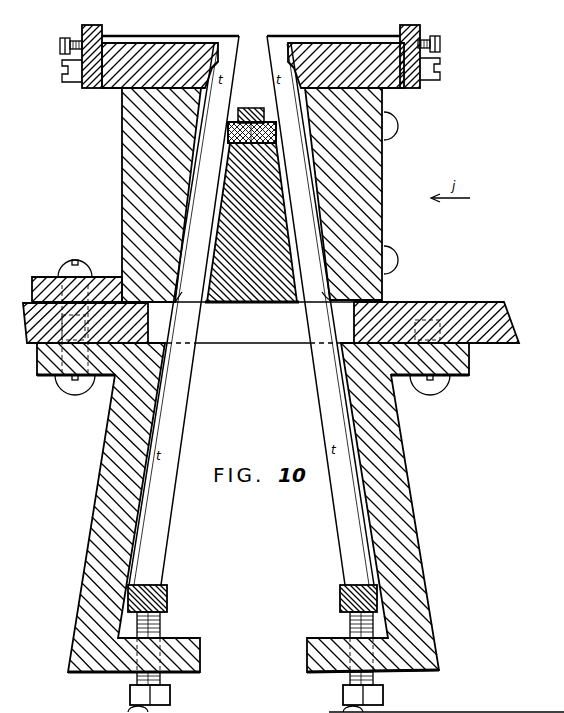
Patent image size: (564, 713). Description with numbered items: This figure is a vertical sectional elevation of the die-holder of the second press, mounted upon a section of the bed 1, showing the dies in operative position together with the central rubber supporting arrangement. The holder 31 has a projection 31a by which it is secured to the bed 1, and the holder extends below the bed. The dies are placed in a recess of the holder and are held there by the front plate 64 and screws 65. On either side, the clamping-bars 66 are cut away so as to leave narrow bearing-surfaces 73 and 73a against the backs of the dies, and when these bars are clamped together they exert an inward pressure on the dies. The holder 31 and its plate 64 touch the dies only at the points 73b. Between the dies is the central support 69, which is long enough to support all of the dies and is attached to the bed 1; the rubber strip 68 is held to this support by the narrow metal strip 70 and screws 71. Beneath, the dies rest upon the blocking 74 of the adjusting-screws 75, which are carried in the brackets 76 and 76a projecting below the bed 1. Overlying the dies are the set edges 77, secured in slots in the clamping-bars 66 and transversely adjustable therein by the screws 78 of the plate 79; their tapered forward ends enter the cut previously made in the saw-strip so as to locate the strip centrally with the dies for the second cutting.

The bed 1 is at (273, 322).
The holder 31 is at (122, 199).
The projection 31a is at (108, 270).
The front plate 64 is at (383, 213).
The screws 65 is at (389, 131).
The clamping-bars 66 is at (112, 90).
The rubber strip 68 is at (262, 132).
The central support 69 is at (274, 303).
The narrow metal strip 70 is at (244, 108).
The screws 71 is at (252, 110).
The bearing-surface 73 is at (253, 62).
The bearing-surface 73a is at (322, 298).
The points 73b is at (178, 298).
The blocking 74 is at (338, 599).
The adjusting-screws 75 is at (340, 697).
The bracket 76 is at (417, 526).
The bracket 76a is at (93, 526).
The set edges 77 is at (190, 36).
The screws 78 is at (58, 48).
The plate 79 is at (95, 22).